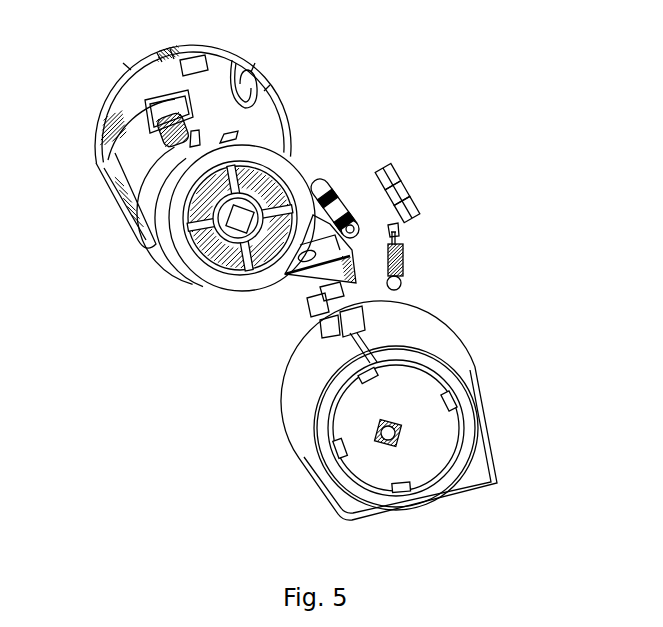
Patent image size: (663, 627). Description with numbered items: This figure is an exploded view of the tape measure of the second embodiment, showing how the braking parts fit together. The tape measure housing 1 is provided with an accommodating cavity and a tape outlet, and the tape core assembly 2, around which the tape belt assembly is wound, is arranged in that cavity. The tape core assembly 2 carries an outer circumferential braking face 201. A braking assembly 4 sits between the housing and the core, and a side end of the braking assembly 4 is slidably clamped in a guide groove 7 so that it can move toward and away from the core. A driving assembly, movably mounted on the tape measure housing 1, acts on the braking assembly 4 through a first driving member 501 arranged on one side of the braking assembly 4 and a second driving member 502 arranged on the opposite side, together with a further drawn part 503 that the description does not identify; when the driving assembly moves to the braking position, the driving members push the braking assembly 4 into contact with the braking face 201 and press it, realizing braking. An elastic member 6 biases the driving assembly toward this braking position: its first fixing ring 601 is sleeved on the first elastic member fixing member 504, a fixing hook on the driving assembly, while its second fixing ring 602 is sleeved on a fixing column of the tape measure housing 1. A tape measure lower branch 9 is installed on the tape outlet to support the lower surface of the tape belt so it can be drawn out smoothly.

The tape measure housing 1 is at (118, 158).
The tape core assembly 2 is at (240, 138).
The braking face 201 is at (288, 150).
The braking assembly 4 is at (337, 210).
The elastic member 6 is at (400, 266).
The first fixing ring 601 is at (398, 235).
The second fixing ring 602 is at (403, 277).
The guide groove 7 is at (237, 90).
The tape measure lower branch 9 is at (300, 323).
The first driving member 501 is at (398, 200).
The second driving member 502 is at (413, 210).
The bracket upper portion 503 is at (397, 177).
The first elastic member fixing member 504 is at (402, 227).